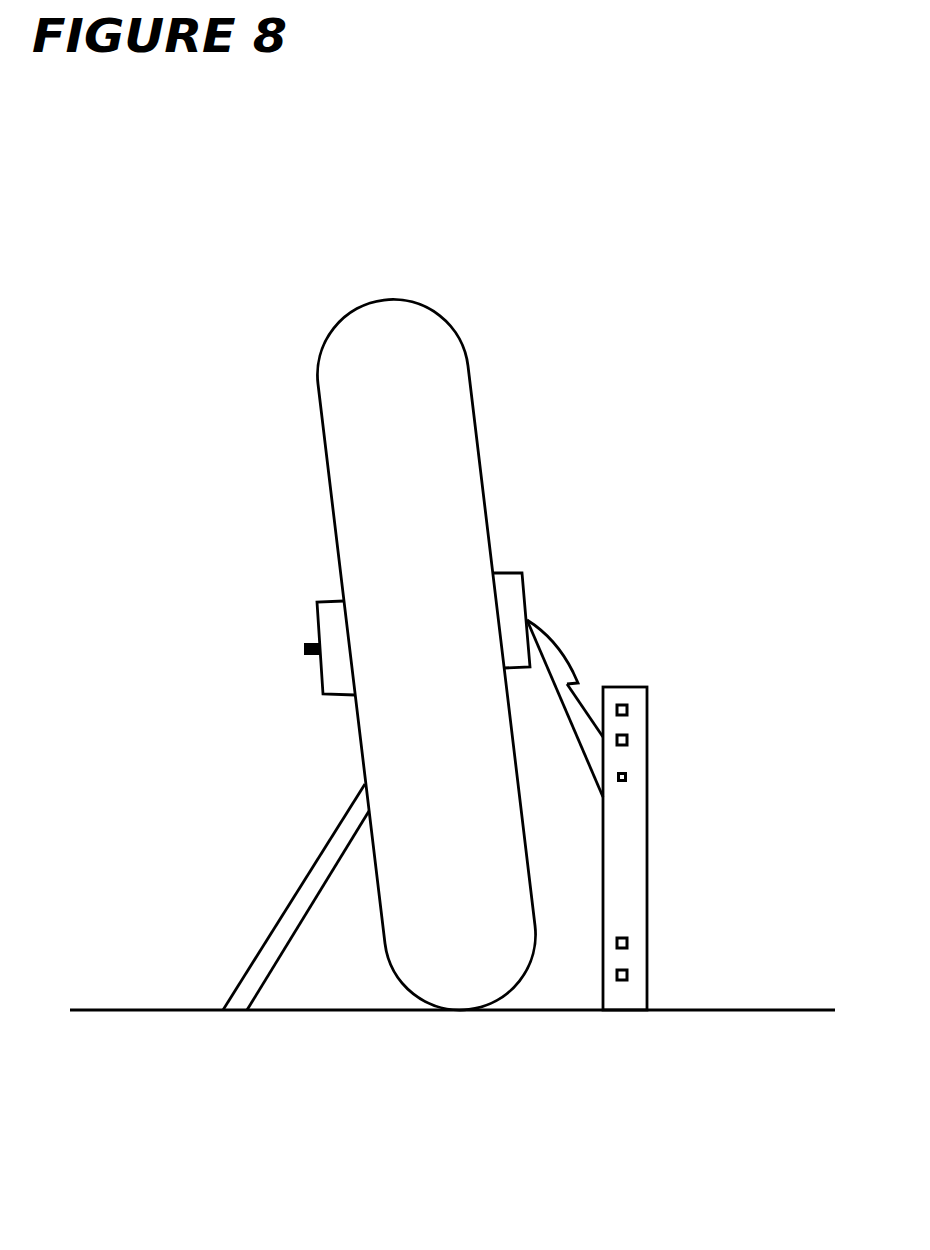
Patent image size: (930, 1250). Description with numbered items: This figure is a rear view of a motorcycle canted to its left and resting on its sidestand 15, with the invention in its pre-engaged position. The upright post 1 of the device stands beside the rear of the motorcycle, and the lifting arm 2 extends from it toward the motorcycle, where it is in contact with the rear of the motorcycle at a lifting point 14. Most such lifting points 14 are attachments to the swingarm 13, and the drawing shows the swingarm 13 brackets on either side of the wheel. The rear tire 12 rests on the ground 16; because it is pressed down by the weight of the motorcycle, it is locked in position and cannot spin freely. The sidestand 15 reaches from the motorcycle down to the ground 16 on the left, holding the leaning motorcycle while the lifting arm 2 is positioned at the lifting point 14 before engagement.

The upright post 1 is at (622, 848).
The lifting arm 2 is at (560, 662).
The rear tire 12 is at (382, 398).
The swingarm 13 is at (317, 604).
The lifting point 14 is at (527, 620).
The sidestand 15 is at (313, 883).
The ground 16 is at (690, 1010).